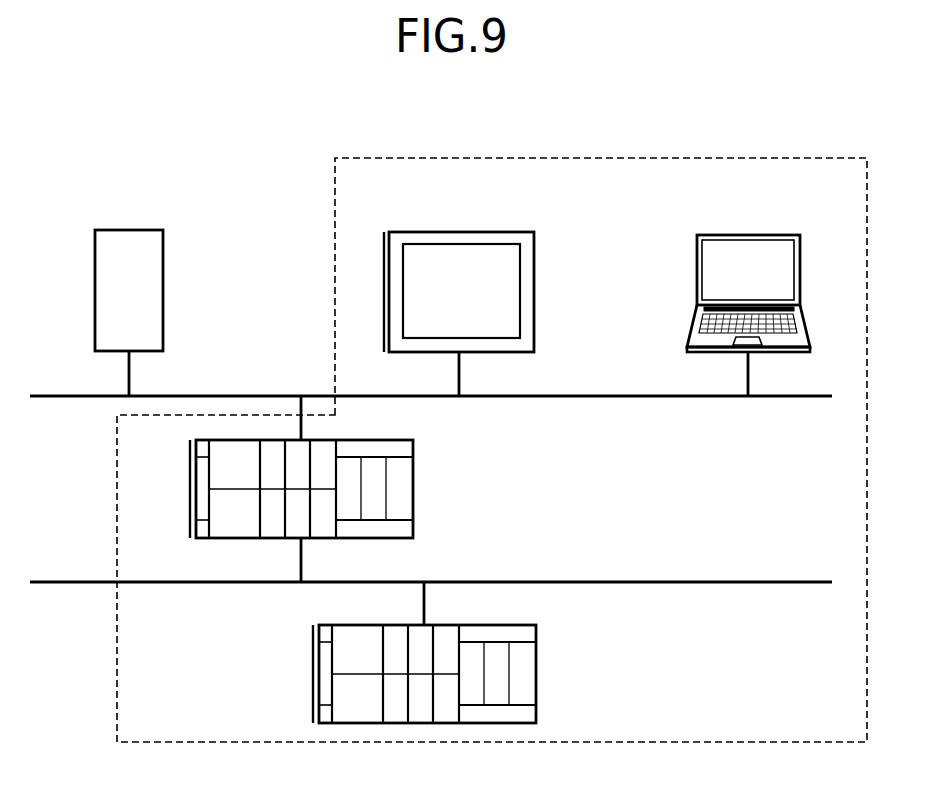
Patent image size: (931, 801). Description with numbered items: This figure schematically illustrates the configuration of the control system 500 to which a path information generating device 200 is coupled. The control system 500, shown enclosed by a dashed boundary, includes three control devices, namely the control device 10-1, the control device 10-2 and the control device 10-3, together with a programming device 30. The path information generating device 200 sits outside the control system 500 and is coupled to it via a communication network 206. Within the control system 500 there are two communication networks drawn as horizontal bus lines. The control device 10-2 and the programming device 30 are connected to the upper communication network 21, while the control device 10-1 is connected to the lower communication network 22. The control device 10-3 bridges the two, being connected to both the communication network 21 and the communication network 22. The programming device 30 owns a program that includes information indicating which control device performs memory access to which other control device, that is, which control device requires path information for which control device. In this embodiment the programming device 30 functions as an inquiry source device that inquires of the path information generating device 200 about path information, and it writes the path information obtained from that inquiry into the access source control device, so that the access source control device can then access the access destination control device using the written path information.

The control system 500 is at (657, 159).
The path information generating device 200 is at (129, 230).
The communication network 206 is at (130, 375).
The control device 10-1 is at (537, 672).
The control device 10-2 is at (461, 232).
The control device 10-3 is at (413, 488).
The communication network 21 is at (593, 397).
The communication network 22 is at (653, 583).
The programming device 30 is at (748, 235).